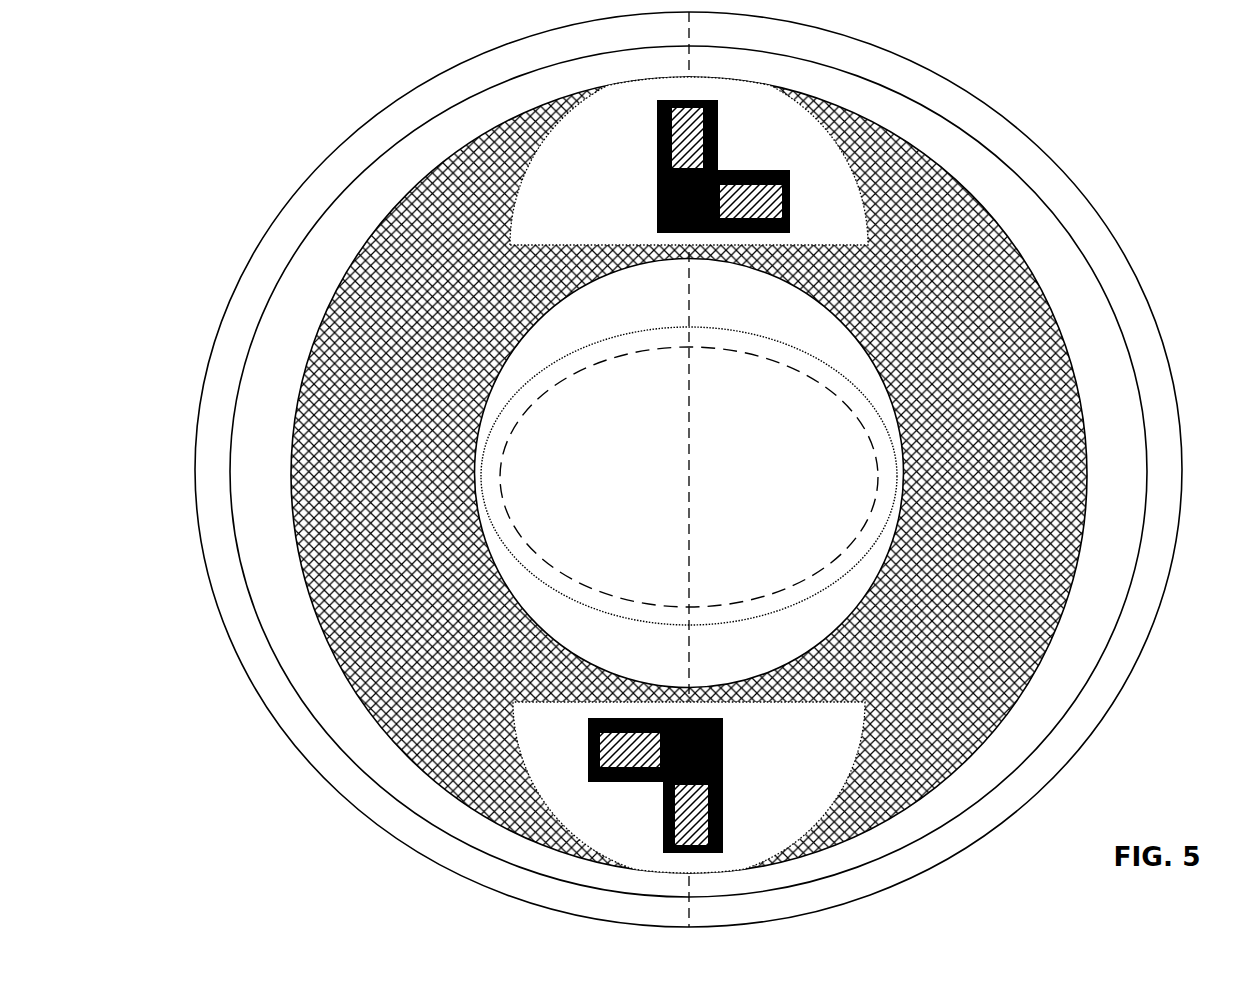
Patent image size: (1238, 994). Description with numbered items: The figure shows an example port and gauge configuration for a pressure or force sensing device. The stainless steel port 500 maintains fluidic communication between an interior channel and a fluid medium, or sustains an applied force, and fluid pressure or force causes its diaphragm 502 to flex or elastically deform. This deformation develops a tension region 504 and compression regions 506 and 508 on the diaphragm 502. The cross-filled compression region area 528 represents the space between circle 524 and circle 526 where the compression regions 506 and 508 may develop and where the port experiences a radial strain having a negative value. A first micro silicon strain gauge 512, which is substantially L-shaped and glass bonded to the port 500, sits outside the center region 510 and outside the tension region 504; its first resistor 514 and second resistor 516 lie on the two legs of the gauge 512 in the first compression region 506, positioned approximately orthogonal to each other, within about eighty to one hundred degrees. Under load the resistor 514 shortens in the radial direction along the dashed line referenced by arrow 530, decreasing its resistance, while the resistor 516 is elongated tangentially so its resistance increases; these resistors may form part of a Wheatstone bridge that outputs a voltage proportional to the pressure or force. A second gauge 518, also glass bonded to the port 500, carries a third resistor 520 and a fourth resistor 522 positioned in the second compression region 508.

The port 500 is at (290, 177).
The diaphragm 502 is at (1015, 172).
The tension region 504 is at (730, 622).
The first compression region 506 is at (565, 116).
The second compression region 508 is at (858, 754).
The center region 510 is at (513, 518).
The first gauge 512 is at (657, 222).
The first resistor 514 is at (711, 143).
The second resistor 516 is at (796, 203).
The second gauge 518 is at (724, 762).
The third resistor 520 is at (657, 822).
The fourth resistor 522 is at (584, 737).
The inner circle 524 is at (580, 296).
The outer circle 526 is at (318, 298).
The compression region area 528 is at (345, 521).
The arrow 530 is at (700, 498).